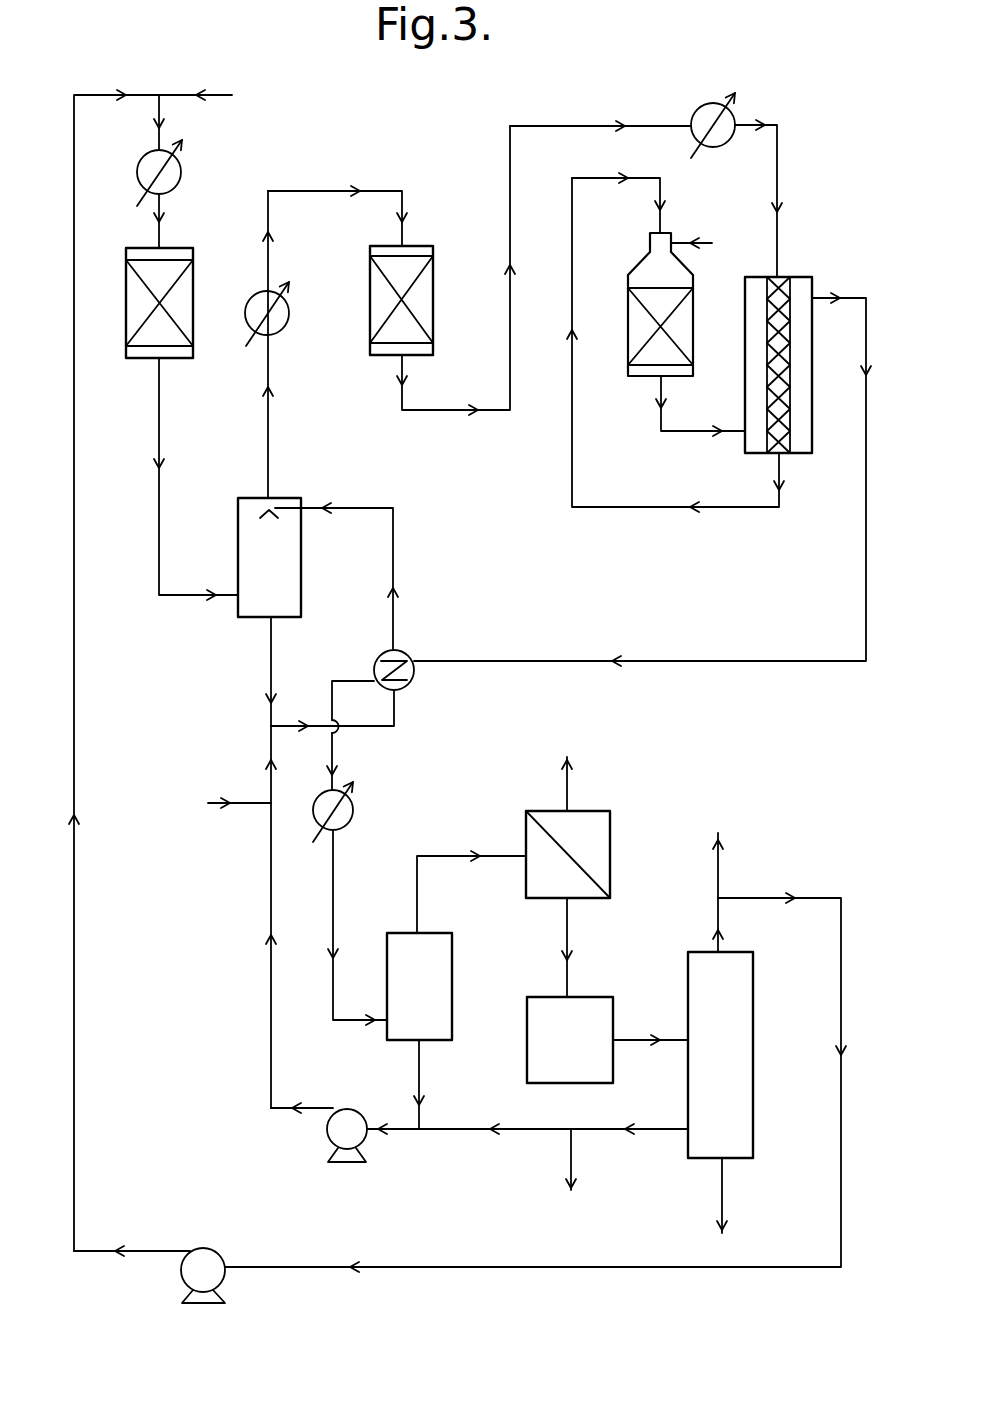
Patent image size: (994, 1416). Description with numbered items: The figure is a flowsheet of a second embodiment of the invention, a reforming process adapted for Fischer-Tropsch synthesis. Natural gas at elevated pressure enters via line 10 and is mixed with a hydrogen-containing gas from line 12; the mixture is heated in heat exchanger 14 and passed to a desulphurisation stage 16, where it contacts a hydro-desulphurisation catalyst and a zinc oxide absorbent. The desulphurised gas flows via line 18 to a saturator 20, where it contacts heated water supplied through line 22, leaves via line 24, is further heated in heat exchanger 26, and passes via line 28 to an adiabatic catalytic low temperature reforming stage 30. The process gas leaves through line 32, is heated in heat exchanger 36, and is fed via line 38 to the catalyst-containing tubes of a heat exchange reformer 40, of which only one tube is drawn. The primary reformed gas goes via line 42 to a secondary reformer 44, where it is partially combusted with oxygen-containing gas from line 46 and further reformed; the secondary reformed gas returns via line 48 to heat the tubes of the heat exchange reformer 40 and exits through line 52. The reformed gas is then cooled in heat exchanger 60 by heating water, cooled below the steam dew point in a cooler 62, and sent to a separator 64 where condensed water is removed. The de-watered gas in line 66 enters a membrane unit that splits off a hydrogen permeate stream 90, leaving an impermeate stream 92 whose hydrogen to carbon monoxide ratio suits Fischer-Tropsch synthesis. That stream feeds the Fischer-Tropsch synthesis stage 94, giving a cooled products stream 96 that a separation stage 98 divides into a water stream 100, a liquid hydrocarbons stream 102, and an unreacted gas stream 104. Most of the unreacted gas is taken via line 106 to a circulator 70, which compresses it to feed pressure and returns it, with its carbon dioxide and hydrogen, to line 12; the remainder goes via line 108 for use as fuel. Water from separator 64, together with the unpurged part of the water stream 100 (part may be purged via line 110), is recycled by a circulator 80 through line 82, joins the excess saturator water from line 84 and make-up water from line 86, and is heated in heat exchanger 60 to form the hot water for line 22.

The natural gas feed line 10 is at (219, 96).
The hydrogen-containing gas line 12 is at (74, 206).
The heat exchanger 14 is at (181, 172).
The desulphurisation stage 16 is at (193, 346).
The desulphurised gas line 18 is at (159, 482).
The saturator 20 is at (238, 545).
The heated water line 22 is at (347, 508).
The saturated gas line 24 is at (268, 433).
The heat exchanger 26 is at (287, 322).
The heated saturated gas line 28 is at (326, 191).
The adiabatic catalytic low temperature reforming stage 30 is at (370, 275).
The process gas line 32 is at (402, 378).
The heat exchanger 36 is at (697, 110).
The heated process gas line 38 is at (778, 222).
The heat exchange reformer 40 is at (797, 277).
The primary reformed gas line 42 is at (572, 236).
The secondary reformer 44 is at (628, 302).
The oxygen-containing gas line 46 is at (688, 236).
The secondary reformed gas line 48 is at (698, 431).
The reformed gas outlet line 52 is at (866, 500).
The heat exchanger 60 is at (410, 685).
The cooler 62 is at (353, 808).
The separator 64 is at (398, 1040).
The de-watered process gas line 66 is at (458, 856).
The circulator 70 is at (216, 1250).
The circulator 80 is at (347, 1162).
The recycled water line 82 is at (271, 1025).
The excess water line 84 is at (271, 660).
The make-up water line 86 is at (244, 803).
The permeate stream 90 is at (567, 779).
The impermeate stream 92 is at (567, 978).
The Fischer-Tropsch synthesis stage 94 is at (527, 1072).
The cooled products stream 96 is at (640, 1040).
The separation stage 98 is at (753, 1078).
The water stream 100 is at (651, 1129).
The liquid hydrocarbons stream 102 is at (722, 1187).
The unreacted gas stream 104 is at (718, 940).
The recycle line 106 is at (812, 898).
The fuel gas line 108 is at (718, 870).
The purge line 110 is at (571, 1160).